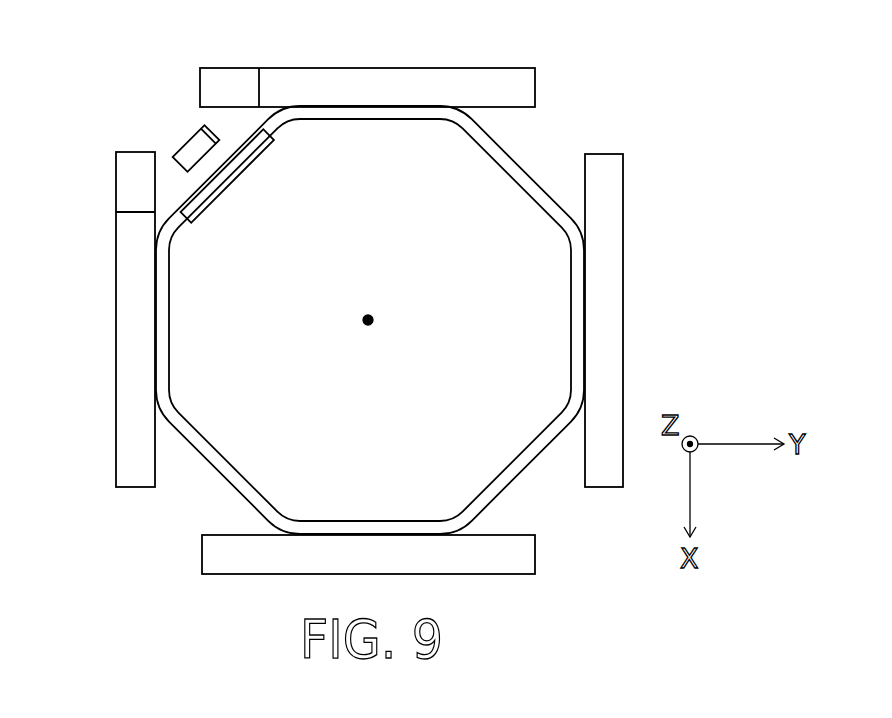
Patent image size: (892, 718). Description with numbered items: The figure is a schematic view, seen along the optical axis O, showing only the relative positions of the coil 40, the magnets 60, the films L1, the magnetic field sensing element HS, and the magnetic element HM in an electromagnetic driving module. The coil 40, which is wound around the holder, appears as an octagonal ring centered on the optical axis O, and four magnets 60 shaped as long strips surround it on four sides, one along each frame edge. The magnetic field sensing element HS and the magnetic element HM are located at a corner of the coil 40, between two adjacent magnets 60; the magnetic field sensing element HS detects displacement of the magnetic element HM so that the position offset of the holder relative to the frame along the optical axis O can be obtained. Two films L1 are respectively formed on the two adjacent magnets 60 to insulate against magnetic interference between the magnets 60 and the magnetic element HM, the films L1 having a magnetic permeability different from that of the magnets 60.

The coil 40 is at (162, 288).
The magnets 60 is at (368, 83).
The films L1 is at (232, 82).
The magnetic field sensing element HS is at (193, 142).
The magnetic element HM is at (230, 175).
The optical axis O is at (368, 320).